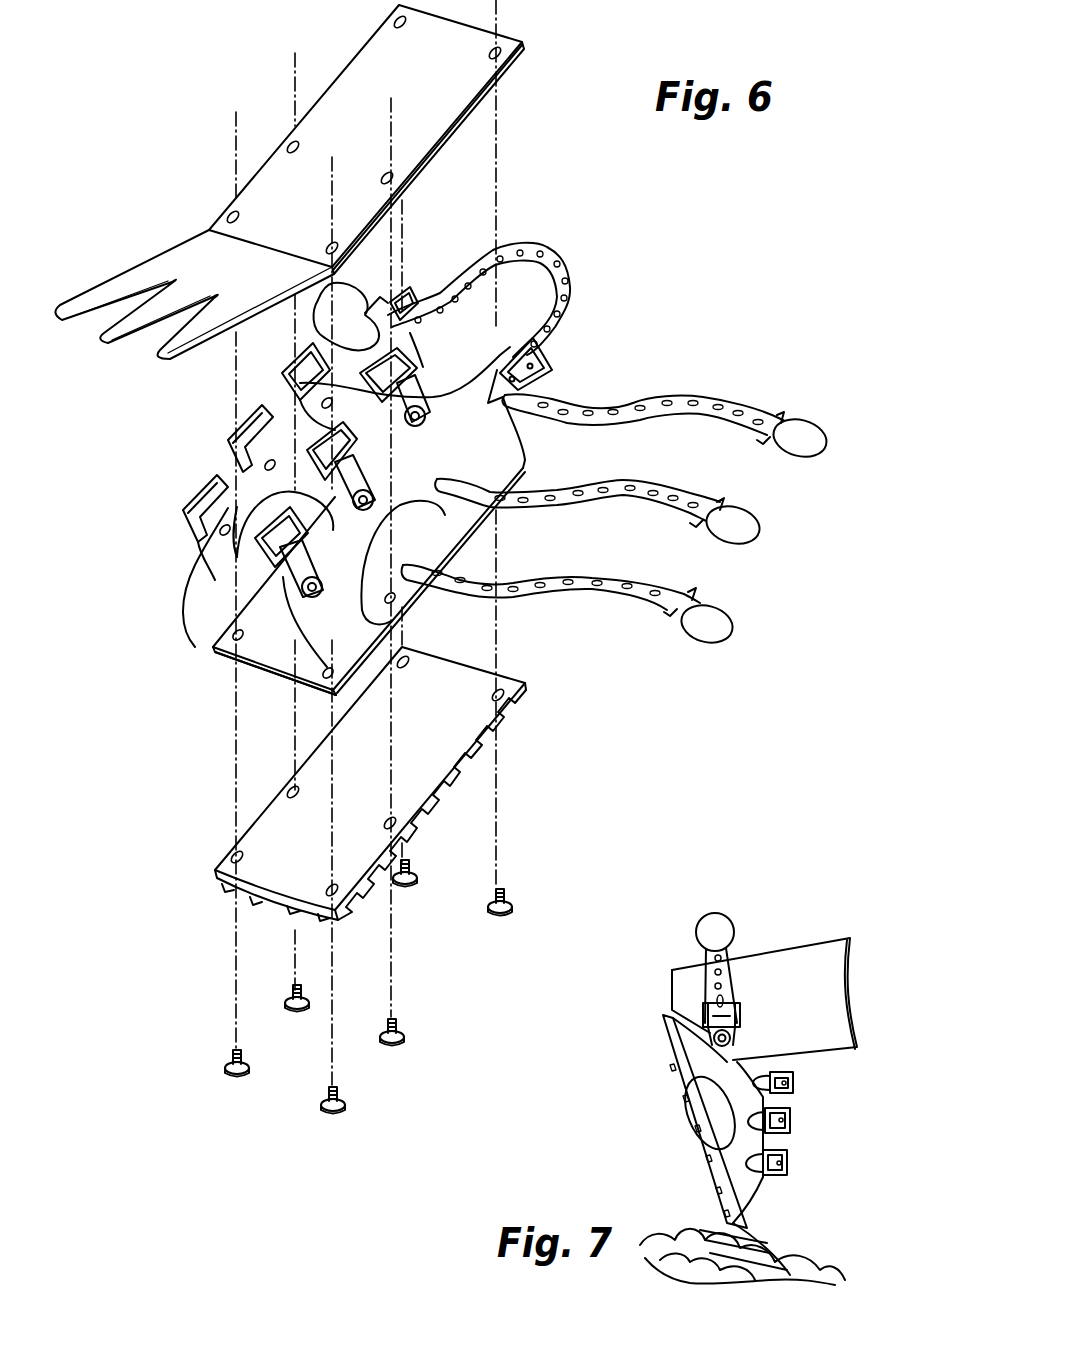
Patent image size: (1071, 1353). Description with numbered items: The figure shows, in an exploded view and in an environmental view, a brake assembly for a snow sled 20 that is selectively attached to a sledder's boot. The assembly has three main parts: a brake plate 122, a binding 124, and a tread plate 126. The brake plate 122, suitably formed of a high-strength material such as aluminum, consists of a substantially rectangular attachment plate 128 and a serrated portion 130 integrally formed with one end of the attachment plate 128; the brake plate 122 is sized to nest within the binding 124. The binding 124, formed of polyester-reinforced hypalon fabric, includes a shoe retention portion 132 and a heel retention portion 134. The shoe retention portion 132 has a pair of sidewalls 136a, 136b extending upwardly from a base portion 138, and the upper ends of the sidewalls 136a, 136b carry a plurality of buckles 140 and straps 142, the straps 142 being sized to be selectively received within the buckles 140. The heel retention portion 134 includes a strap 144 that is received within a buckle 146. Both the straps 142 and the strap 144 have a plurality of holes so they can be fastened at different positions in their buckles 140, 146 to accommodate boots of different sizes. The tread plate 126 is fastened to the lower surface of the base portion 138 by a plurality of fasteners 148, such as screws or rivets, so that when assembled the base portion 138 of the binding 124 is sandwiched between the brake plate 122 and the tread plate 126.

In FIG. 6, the snow sled 20 is at (603, 233).
In FIG. 7, the snow sled 20 is at (798, 1121).
In FIG. 6, the brake plate 122 is at (514, 33).
In FIG. 7, the brake plate 122 is at (697, 1103).
In FIG. 6, the binding 124 is at (210, 650).
In FIG. 7, the binding 124 is at (786, 1102).
In FIG. 6, the tread plate 126 is at (215, 866).
In FIG. 7, the tread plate 126 is at (665, 1057).
In FIG. 6, the attachment plate 128 is at (462, 136).
In FIG. 6, the serrated portion 130 is at (78, 290).
In FIG. 6, the shoe retention portion 132 is at (229, 437).
In FIG. 6, the heel retention portion 134 is at (556, 317).
In FIG. 6, the sidewall 136a is at (188, 592).
In FIG. 6, the sidewall 136b is at (338, 628).
In FIG. 6, the base portion 138 is at (278, 656).
In FIG. 6, the buckles 140 is at (186, 491).
In FIG. 6, the straps 142 is at (600, 593).
In FIG. 6, the strap 144 is at (513, 248).
In FIG. 6, the buckle 146 is at (545, 379).
In FIG. 6, the fasteners 148 is at (225, 1063).